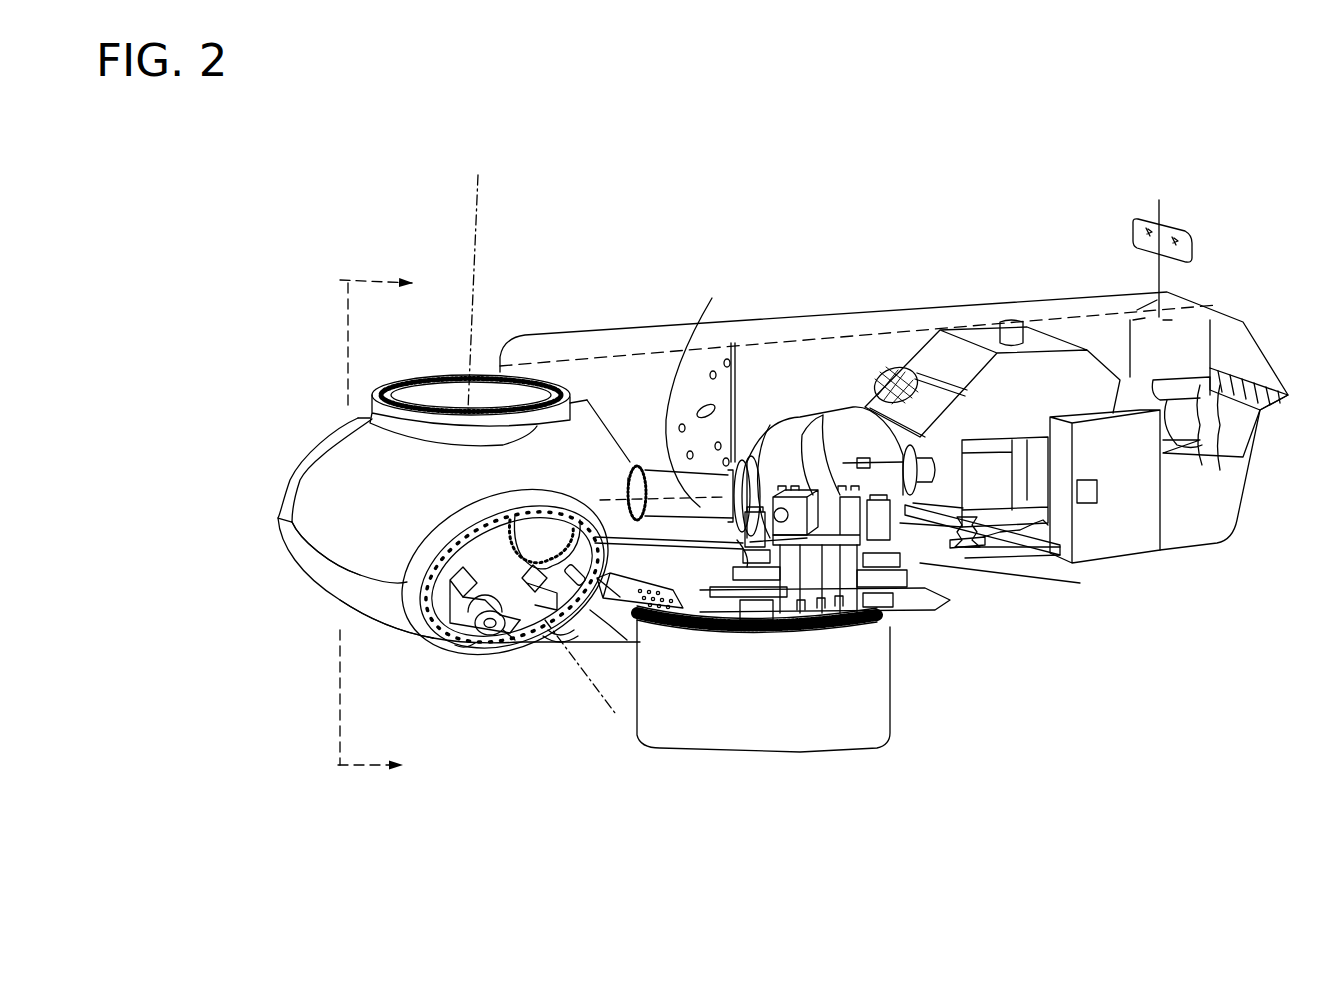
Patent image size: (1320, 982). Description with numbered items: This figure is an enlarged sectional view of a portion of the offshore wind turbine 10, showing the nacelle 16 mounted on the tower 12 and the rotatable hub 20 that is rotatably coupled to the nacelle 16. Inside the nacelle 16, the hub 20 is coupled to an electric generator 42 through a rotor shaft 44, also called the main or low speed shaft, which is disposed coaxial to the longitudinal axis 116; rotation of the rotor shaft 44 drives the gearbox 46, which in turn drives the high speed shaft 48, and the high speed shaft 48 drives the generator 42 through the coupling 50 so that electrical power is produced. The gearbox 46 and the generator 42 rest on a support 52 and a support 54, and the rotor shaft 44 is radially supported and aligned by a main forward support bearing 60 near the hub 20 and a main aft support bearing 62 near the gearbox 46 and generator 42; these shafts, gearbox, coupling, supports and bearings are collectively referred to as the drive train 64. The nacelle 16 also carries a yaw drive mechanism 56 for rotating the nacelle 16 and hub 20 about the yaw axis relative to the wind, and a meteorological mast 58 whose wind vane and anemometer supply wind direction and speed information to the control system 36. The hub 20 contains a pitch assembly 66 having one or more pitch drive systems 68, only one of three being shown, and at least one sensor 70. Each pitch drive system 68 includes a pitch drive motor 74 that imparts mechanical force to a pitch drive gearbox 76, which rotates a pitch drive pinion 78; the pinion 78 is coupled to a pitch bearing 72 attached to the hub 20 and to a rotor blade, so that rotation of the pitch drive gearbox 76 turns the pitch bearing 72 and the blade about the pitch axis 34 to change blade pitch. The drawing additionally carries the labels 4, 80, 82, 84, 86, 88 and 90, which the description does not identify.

The offshore wind turbine 10 is at (303, 252).
The tower 12 is at (812, 752).
The nacelle 16 is at (868, 262).
The hub 20 is at (264, 509).
The section line 4 is at (361, 521).
The pitch axis 34 is at (478, 200).
The control system 36 is at (1097, 438).
The electric generator 42 is at (990, 533).
The rotor shaft 44 is at (653, 482).
The gearbox 46 is at (830, 440).
The high speed shaft 48 is at (905, 505).
The coupling 50 is at (935, 438).
The support 52 is at (855, 600).
The support 54 is at (958, 540).
The yaw drive mechanism 56 is at (755, 600).
The meteorological mast 58 is at (1190, 235).
The main forward support bearing 60 is at (627, 503).
The main aft support bearing 62 is at (788, 495).
The drive train 64 is at (699, 410).
The pitch assembly 66 is at (467, 498).
The pitch drive system 68 is at (446, 602).
The sensor 70 is at (605, 615).
The pitch bearing 72 is at (437, 642).
The pitch drive motor 74 is at (456, 568).
The pitch drive gearbox 76 is at (497, 572).
The pitch drive pinion 78 is at (473, 643).
The slot 80 is at (540, 620).
The sensor bracket 82 is at (578, 545).
The bracket 84 is at (582, 640).
The mounting plate 86 is at (507, 640).
The bolt circle 88 is at (542, 520).
The hub wall 90 is at (427, 568).
The longitudinal axis 116 is at (697, 497).